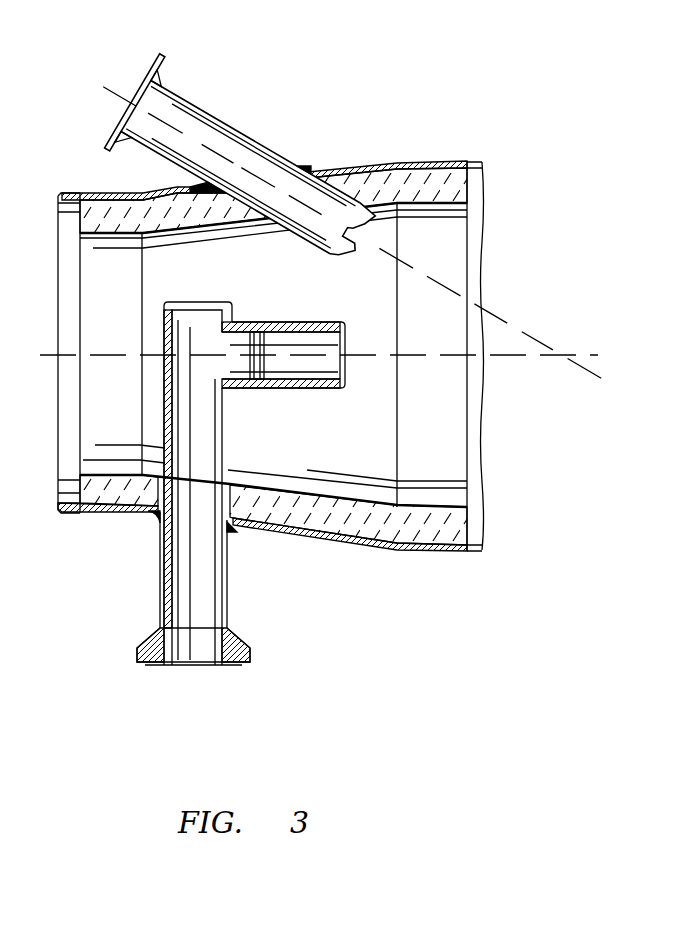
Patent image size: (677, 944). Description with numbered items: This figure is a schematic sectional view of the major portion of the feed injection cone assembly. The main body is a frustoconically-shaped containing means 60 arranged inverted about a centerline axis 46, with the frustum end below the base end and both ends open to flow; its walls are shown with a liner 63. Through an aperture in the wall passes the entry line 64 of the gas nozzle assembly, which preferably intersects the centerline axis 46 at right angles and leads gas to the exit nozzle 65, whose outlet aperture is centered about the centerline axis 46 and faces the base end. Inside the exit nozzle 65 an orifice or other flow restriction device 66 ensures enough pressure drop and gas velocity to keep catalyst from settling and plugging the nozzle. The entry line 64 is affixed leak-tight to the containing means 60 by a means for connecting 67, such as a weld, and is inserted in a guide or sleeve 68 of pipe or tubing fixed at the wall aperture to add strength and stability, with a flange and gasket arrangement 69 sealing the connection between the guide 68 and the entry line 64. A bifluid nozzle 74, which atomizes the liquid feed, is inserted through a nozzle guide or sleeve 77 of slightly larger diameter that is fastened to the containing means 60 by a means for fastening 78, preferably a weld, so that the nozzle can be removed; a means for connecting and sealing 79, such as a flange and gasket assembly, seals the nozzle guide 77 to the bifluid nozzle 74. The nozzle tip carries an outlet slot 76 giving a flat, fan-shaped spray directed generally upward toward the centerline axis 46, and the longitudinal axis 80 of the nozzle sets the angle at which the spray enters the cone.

The centerline axis 46 is at (423, 358).
The frustoconically-shaped containing means 60 is at (282, 534).
The liner 63 is at (333, 389).
The entry line 64 is at (222, 453).
The exit nozzle 65 is at (308, 389).
The orifice or other flow restriction device 66 is at (258, 380).
The means for connecting 67 is at (158, 527).
The guide or sleeve 68 is at (227, 605).
The flange and gasket arrangement 69 is at (148, 638).
The bifluid nozzle 74 is at (309, 222).
The outlet aperture or slot 76 is at (361, 238).
The nozzle guide or sleeve 77 is at (252, 142).
The means for fastening 78 is at (196, 183).
The means for connecting and sealing 79 is at (166, 74).
The longitudinal axis 80 is at (445, 283).